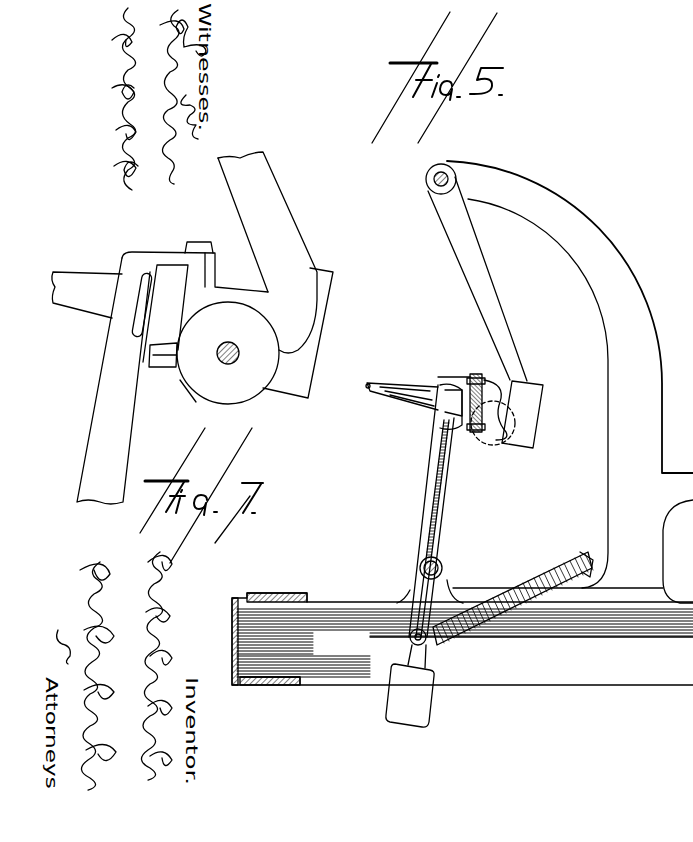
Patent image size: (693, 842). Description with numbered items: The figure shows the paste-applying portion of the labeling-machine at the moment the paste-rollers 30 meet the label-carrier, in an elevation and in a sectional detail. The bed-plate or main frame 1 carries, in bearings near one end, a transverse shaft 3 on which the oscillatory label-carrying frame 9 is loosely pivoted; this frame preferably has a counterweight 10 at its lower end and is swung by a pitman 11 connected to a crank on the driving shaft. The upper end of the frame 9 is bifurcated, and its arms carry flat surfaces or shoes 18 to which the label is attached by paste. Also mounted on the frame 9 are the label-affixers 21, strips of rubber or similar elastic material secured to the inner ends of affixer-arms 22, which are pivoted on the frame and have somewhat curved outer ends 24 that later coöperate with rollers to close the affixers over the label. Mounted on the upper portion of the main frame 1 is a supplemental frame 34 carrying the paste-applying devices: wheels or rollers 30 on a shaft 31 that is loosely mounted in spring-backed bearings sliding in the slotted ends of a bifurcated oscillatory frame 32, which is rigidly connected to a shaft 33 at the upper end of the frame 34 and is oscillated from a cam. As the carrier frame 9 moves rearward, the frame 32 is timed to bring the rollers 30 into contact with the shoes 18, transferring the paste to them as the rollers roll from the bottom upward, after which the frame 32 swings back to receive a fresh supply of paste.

In FIG. 5, the bed-plate or main frame 1 is at (462, 639).
In FIG. 5, the transverse shaft 3 is at (420, 567).
In FIG. 5, the oscillatory label-carrying frame 9 is at (425, 490).
In FIG. 7, the oscillatory label-carrying frame 9 is at (172, 378).
In FIG. 5, the counterweight 10 is at (410, 686).
In FIG. 5, the pitman 11 is at (528, 581).
In FIG. 7, the shoes 18 is at (179, 283).
In FIG. 5, the label-affixers 21 is at (535, 418).
In FIG. 7, the label-affixers 21 is at (317, 340).
In FIG. 5, the affixer-arms 22 is at (490, 371).
In FIG. 5, the curved outer ends of the affixer-arms 24 is at (392, 393).
In FIG. 7, the curved outer ends of the affixer-arms 24 is at (70, 283).
In FIG. 5, the paste wheels or rollers 30 is at (493, 445).
In FIG. 7, the paste wheels or rollers 30 is at (210, 392).
In FIG. 7, the shaft 31 is at (239, 356).
In FIG. 5, the bifurcated oscillatory frame 32 is at (472, 286).
In FIG. 7, the bifurcated oscillatory frame 32 is at (277, 225).
In FIG. 5, the shaft 33 is at (427, 180).
In FIG. 5, the supplemental frame 34 is at (570, 382).